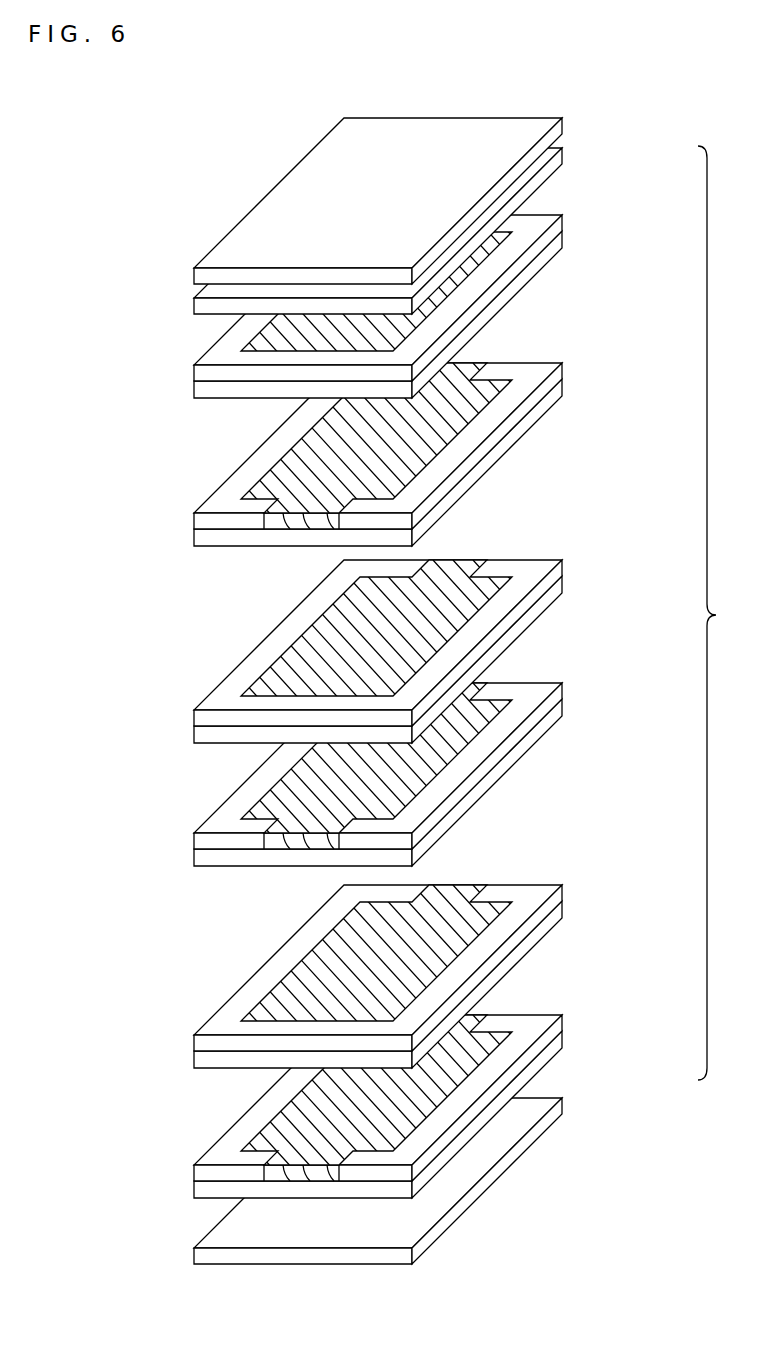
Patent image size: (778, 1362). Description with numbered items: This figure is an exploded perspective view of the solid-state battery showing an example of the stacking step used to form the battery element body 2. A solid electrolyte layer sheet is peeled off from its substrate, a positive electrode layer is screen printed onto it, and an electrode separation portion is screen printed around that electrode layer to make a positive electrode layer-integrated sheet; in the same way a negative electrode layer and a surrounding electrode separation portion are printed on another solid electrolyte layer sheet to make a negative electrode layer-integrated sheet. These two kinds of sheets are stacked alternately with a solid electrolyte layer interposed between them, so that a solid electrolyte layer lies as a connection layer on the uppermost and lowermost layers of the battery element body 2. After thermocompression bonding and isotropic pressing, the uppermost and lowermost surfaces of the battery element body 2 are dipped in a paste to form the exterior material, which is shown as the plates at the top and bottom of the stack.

The battery element body 2 is at (718, 613).